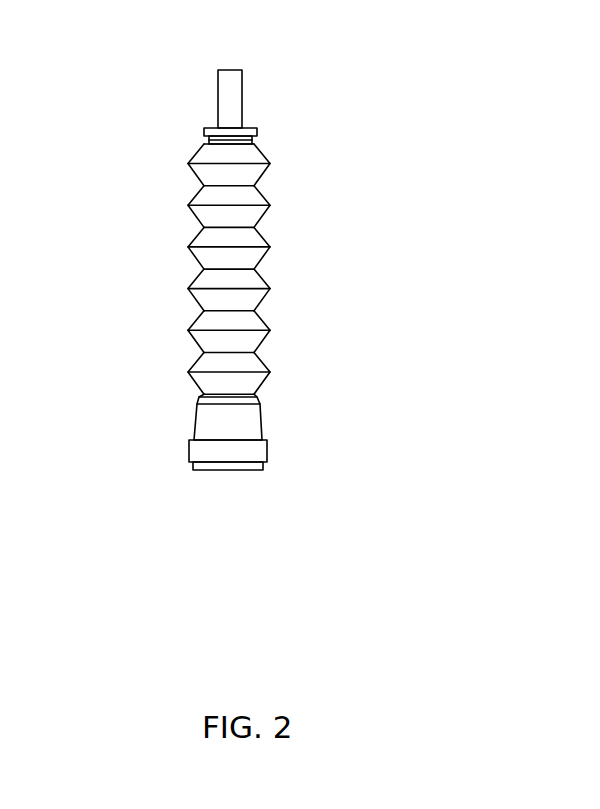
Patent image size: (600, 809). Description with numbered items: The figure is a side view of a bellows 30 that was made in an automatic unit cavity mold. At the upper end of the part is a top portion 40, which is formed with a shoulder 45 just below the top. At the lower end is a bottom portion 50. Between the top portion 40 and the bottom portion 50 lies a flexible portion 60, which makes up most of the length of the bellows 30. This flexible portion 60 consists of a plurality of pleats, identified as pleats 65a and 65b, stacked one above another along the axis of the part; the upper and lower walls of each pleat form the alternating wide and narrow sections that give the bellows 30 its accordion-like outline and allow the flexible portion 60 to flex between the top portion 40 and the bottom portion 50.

The bellows 30 is at (389, 192).
The top portion 40 is at (247, 97).
The shoulder 45 is at (260, 122).
The flexible portion 60 is at (130, 145).
The pleat 65a is at (267, 316).
The pleat 65b is at (262, 340).
The bottom portion 50 is at (187, 425).